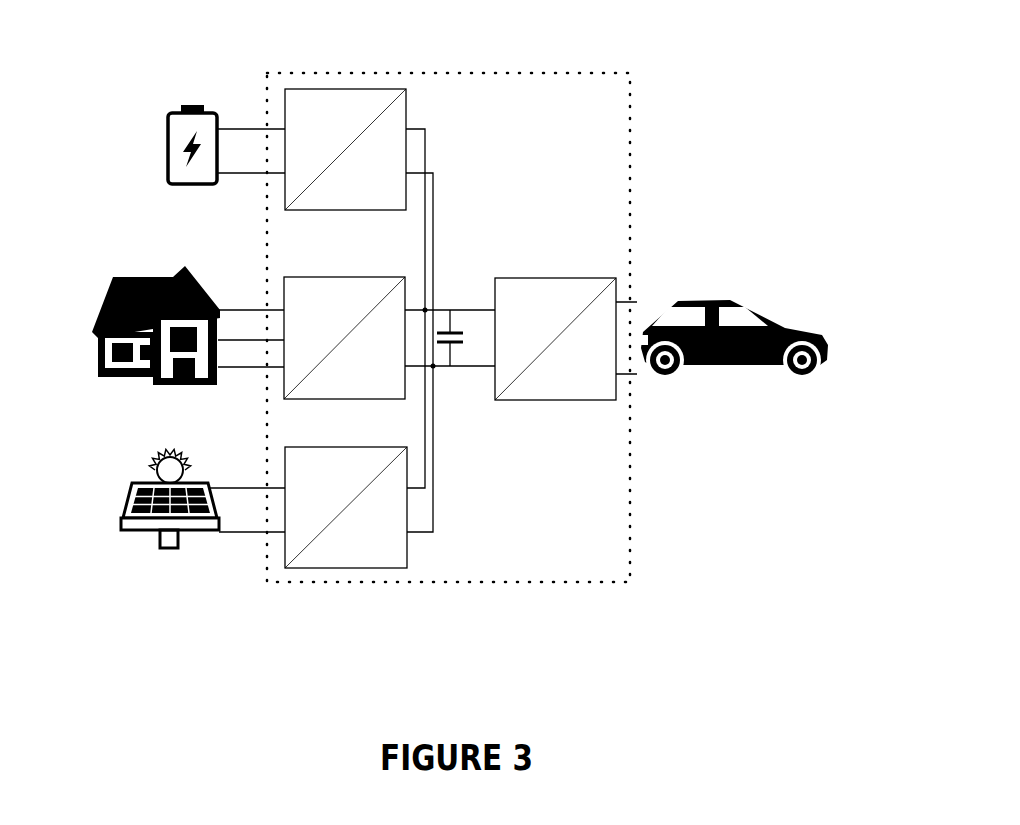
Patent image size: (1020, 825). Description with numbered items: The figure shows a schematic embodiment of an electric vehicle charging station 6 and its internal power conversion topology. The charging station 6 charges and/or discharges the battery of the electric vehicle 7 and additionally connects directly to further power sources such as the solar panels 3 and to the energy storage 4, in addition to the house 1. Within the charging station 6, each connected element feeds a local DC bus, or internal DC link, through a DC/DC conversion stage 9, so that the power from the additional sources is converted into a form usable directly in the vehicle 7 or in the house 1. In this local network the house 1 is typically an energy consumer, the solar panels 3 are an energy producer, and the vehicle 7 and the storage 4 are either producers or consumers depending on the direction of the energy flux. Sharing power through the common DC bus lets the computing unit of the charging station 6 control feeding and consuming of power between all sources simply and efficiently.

The house 1 is at (98, 292).
The solar panels 3 is at (125, 530).
The energy storage 4 is at (168, 124).
The electric vehicle charging station 6 is at (620, 70).
The electric vehicle 7 is at (798, 322).
The DC/DC conversion stage 9 is at (351, 100).